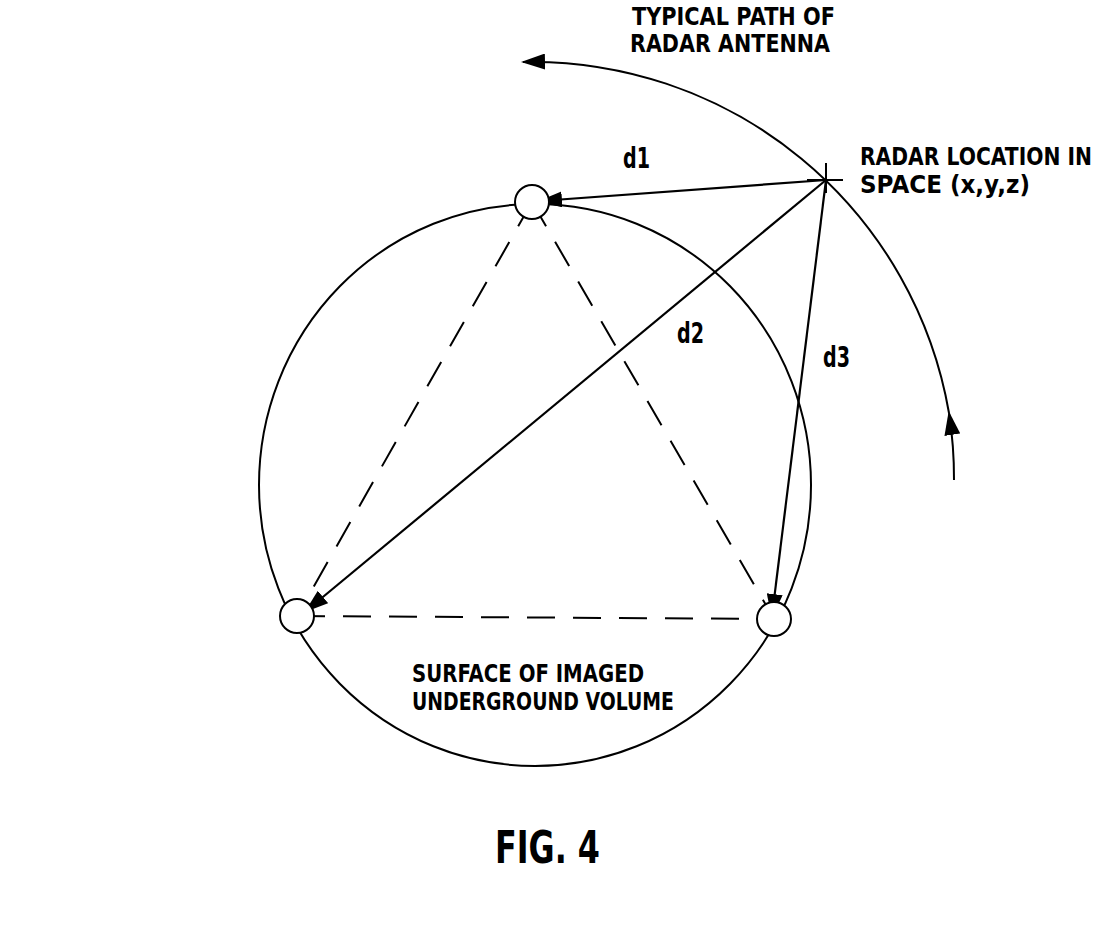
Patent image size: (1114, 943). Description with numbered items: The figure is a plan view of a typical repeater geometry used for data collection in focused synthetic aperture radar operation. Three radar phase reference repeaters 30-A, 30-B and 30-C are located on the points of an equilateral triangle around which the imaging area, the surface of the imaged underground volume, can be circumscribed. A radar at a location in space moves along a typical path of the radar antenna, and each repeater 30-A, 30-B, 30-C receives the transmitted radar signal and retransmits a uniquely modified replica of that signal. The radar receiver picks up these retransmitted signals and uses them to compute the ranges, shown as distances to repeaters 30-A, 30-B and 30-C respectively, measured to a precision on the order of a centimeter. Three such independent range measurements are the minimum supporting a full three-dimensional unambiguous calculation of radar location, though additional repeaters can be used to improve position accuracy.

The repeater 30-A is at (468, 182).
The repeater 30-B is at (187, 616).
The repeater 30-C is at (882, 619).